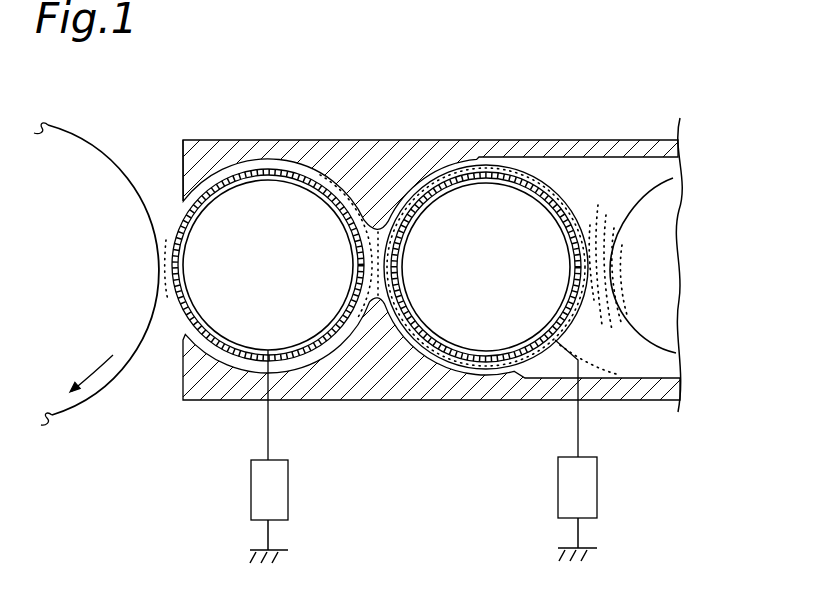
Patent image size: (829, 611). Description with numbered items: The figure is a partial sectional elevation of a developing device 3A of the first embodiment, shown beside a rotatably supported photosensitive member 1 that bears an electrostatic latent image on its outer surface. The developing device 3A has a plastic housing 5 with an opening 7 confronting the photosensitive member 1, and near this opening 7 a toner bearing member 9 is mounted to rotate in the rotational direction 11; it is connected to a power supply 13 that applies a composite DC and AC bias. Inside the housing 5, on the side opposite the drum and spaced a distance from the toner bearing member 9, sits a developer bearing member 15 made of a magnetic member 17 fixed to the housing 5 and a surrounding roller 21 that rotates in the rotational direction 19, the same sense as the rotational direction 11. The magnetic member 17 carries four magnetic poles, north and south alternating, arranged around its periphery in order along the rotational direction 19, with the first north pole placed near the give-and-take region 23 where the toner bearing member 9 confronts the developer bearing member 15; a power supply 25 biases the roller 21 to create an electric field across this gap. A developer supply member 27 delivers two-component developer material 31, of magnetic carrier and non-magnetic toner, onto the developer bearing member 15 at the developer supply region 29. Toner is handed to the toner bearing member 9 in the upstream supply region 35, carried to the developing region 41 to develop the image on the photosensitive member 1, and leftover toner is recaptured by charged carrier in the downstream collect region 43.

The photosensitive member 1 is at (104, 142).
The developing device 3A is at (398, 125).
The housing 5 is at (320, 140).
The opening 7 is at (186, 208).
The toner bearing member 9 is at (271, 172).
The rotational direction 11 is at (203, 240).
The power supply 13 is at (289, 488).
The developer bearing member 15 is at (512, 170).
The magnetic member 17 is at (528, 212).
The rotational direction 19 is at (421, 236).
The roller 21 is at (560, 197).
The give-and-take region 23 is at (364, 277).
The power supply 25 is at (557, 489).
The developer supply member 27 is at (652, 318).
The developer supply region 29 is at (593, 240).
The two-component developer material 31 is at (623, 318).
The supply region 35 is at (359, 245).
The developing region 41 is at (165, 275).
The collect region 43 is at (357, 300).